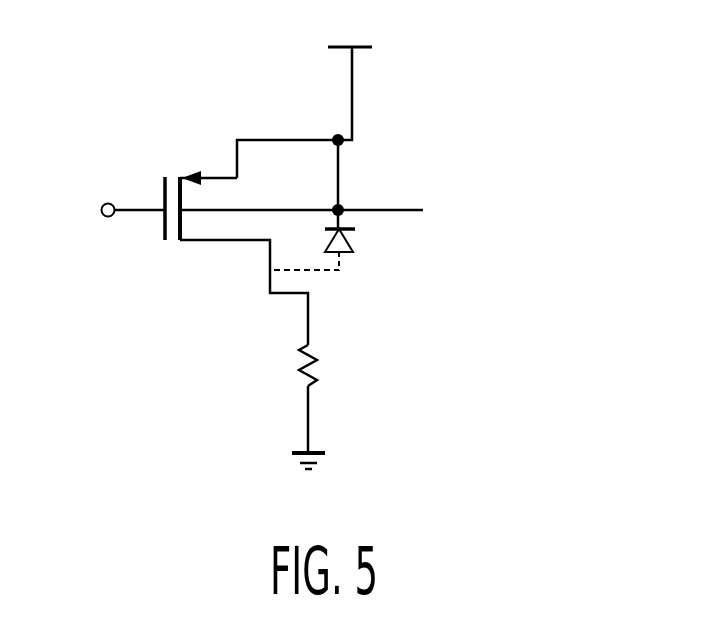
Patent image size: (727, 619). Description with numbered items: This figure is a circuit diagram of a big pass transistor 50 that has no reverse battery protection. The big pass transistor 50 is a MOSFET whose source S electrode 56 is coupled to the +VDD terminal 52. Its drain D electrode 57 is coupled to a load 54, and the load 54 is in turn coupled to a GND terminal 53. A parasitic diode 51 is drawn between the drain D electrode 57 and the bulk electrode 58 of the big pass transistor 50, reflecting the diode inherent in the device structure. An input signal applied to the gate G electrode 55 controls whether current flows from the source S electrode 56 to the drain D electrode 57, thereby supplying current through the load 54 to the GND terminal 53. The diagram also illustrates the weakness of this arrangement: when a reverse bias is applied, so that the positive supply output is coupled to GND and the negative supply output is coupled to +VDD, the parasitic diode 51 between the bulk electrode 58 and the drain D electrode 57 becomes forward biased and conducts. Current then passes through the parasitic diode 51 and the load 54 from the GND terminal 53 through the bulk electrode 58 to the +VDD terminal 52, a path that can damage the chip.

The big pass transistor 50 is at (383, 176).
The parasitic diode 51 is at (355, 252).
The +VDD terminal 52 is at (377, 33).
The GND terminal 53 is at (293, 460).
The load 54 is at (316, 363).
The gate G electrode 55 is at (106, 256).
The source S electrode 56 is at (185, 141).
The drain D electrode 57 is at (199, 275).
The bulk electrode 58 is at (423, 210).